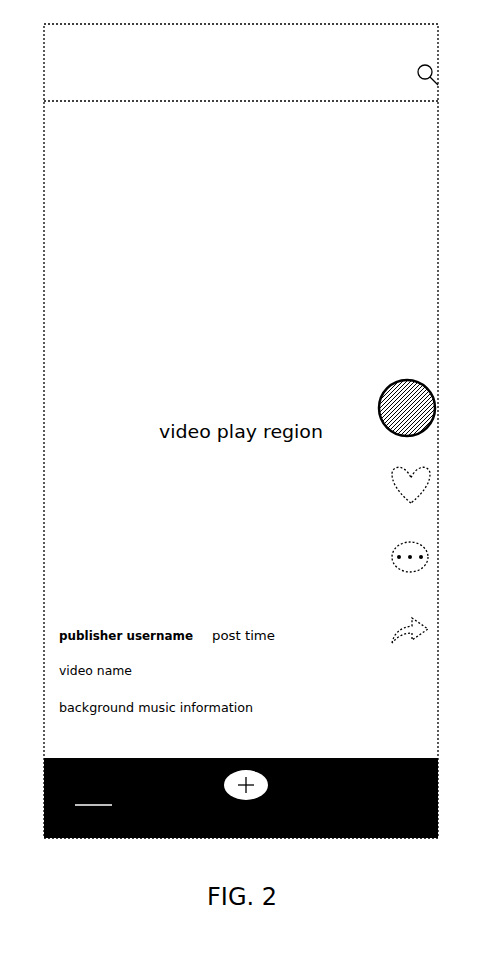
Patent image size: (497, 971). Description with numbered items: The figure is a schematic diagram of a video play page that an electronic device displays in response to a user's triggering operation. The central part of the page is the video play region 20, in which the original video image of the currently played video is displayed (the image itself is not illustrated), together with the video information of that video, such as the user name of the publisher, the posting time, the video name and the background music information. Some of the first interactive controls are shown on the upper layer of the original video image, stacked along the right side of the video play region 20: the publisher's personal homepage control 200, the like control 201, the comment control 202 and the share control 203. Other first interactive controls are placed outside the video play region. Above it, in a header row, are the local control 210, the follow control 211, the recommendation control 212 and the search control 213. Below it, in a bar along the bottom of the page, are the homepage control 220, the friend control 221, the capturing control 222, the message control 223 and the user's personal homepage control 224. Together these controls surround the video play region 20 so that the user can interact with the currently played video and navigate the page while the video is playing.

The video play region 20 is at (335, 101).
The publisher's personal homepage control 200 is at (392, 387).
The like control 201 is at (393, 475).
The comment control 202 is at (394, 551).
The share control 203 is at (393, 630).
The local control 210 is at (150, 67).
The follow control 211 is at (213, 65).
The recommendation control 212 is at (302, 65).
The search control 213 is at (418, 67).
The homepage control 220 is at (112, 797).
The friend control 221 is at (167, 773).
The capturing control 222 is at (252, 800).
The message control 223 is at (320, 775).
The user's personal homepage control 224 is at (402, 775).